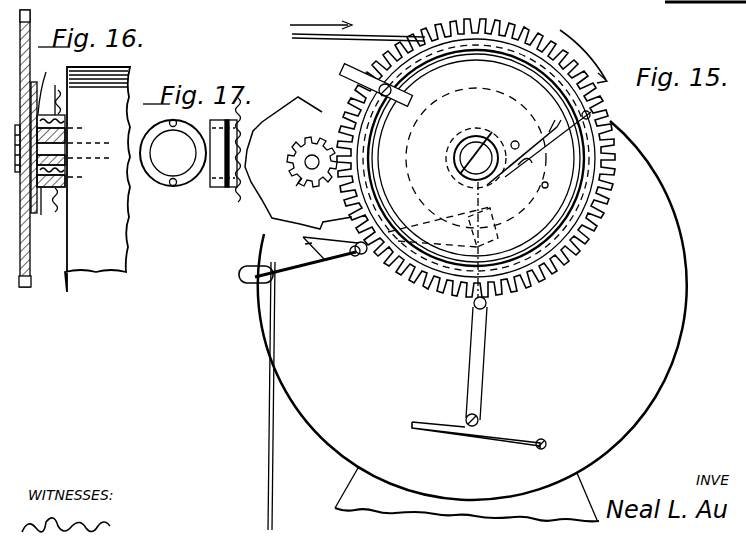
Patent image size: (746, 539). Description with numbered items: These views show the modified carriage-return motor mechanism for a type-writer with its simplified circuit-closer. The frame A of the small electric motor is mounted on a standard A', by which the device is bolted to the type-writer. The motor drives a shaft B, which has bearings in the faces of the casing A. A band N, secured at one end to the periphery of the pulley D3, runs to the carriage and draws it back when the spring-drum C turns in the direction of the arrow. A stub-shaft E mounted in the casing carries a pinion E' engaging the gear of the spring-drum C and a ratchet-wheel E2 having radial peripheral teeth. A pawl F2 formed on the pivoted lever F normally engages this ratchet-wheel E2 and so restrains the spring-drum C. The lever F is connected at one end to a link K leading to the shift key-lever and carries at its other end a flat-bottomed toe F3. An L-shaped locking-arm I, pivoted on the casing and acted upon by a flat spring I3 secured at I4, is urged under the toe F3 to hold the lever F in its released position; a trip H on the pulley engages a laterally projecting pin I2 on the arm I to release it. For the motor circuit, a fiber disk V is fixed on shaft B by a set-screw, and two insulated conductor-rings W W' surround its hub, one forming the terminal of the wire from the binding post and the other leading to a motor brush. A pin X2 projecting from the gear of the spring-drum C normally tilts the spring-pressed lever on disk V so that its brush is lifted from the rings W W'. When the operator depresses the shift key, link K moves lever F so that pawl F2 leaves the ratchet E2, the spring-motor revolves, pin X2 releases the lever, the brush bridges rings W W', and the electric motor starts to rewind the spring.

In FIG. 15, the frame A is at (472, 321).
In FIG. 16, the frame A is at (108, 179).
In FIG. 15, the standard A' is at (214, 11).
In FIG. 15, the shaft B is at (492, 132).
In FIG. 15, the spring-drum C is at (592, 70).
In FIG. 16, the spring-drum C is at (29, 288).
In FIG. 15, the pulley D3 is at (476, 158).
In FIG. 15, the stub-shaft E is at (312, 147).
In FIG. 15, the pinion E' is at (289, 193).
In FIG. 15, the ratchet-wheel E2 is at (298, 163).
In FIG. 15, the lever F is at (338, 247).
In FIG. 15, the pawl F2 is at (311, 246).
In FIG. 15, the toe F3 is at (498, 238).
In FIG. 15, the trip H is at (345, 70).
In FIG. 15, the locking-arm I is at (484, 366).
In FIG. 15, the pin I2 is at (473, 309).
In FIG. 15, the flat spring I3 is at (500, 434).
In FIG. 15, the securing point of spring I4 is at (546, 441).
In FIG. 15, the link K is at (270, 415).
In FIG. 15, the band N is at (357, 27).
In FIG. 16, the disk V is at (48, 87).
In FIG. 16, the conductor-ring W is at (47, 178).
In FIG. 17, the conductor-ring W is at (188, 171).
In FIG. 16, the conductor-ring W' is at (79, 193).
In FIG. 17, the conductor-ring W' is at (227, 165).
In FIG. 15, the pin X2 is at (574, 213).